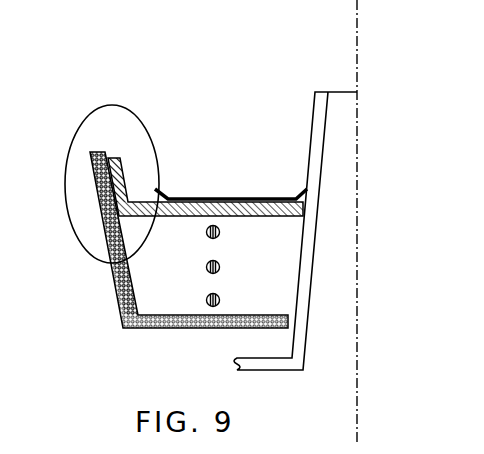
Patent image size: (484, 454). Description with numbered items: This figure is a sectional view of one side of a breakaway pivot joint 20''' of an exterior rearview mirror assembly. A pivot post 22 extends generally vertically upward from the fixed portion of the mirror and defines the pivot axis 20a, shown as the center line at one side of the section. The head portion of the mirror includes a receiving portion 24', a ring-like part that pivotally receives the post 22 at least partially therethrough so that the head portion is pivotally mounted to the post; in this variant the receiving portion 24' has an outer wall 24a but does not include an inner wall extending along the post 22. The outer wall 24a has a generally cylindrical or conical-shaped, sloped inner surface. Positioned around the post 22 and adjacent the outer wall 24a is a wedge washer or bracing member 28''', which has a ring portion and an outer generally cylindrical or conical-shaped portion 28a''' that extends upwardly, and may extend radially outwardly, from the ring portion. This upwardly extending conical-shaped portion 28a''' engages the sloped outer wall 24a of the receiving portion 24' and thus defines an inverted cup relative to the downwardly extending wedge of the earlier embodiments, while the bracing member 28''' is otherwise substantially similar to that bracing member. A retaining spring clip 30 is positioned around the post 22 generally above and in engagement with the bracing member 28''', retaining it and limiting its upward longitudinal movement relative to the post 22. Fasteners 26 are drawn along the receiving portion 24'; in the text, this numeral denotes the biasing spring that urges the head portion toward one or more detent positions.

The breakaway joint 20''' is at (134, 151).
The pivot axis 20a is at (355, 14).
The pivot post 22 is at (318, 106).
The receiving portion 24' is at (177, 262).
The outer wall 24a is at (116, 276).
The biasing member or spring 26 is at (220, 296).
The bracing member 28''' is at (205, 211).
The conical-shaped portion 28a''' is at (165, 163).
The spring clip 30 is at (224, 200).